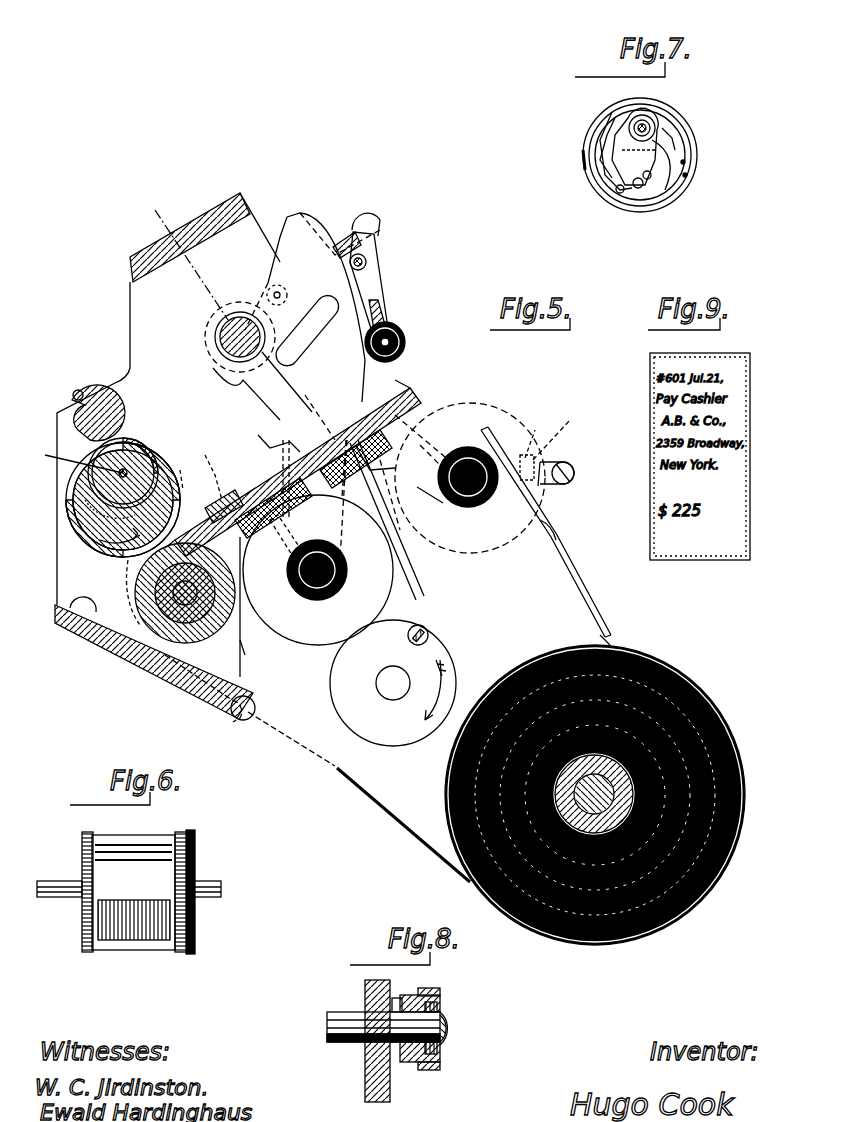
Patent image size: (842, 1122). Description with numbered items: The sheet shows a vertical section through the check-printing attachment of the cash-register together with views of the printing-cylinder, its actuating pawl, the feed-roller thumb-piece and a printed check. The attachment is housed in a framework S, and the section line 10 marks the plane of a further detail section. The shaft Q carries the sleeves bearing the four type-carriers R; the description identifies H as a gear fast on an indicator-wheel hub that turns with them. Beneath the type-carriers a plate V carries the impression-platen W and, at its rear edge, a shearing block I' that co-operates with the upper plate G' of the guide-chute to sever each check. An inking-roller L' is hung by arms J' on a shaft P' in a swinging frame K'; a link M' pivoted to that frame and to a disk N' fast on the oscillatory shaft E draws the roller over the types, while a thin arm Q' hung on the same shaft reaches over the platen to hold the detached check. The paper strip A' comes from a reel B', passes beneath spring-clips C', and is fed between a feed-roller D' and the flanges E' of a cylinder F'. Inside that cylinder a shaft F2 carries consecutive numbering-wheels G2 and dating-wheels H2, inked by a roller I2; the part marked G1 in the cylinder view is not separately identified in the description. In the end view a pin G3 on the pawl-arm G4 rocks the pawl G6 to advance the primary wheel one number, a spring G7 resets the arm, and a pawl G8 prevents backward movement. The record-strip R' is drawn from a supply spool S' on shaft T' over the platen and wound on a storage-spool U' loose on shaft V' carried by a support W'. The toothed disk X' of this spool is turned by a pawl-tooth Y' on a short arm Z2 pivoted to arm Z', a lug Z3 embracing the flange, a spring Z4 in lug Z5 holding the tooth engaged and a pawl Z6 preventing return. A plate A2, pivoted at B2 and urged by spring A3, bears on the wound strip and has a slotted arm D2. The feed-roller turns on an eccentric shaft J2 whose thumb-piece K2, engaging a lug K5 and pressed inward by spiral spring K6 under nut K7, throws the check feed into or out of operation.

In FIG. 5, the framework S is at (167, 455).
In FIG. 8, the framework S is at (366, 1041).
In FIG. 5, the section line 10 is at (185, 259).
In FIG. 5, the shaft Q is at (240, 361).
In FIG. 5, the supply spool S' is at (284, 526).
In FIG. 5, the type-carriers R is at (344, 355).
In FIG. 5, the swinging frame K' is at (343, 232).
In FIG. 5, the thin arm Q' is at (344, 323).
In FIG. 5, the shaft P' is at (382, 256).
In FIG. 5, the arms J' is at (375, 283).
In FIG. 5, the inking-roller L' is at (403, 342).
In FIG. 5, the inking-roller I2 is at (105, 420).
In FIG. 5, the dating-wheels H2 is at (150, 452).
In FIG. 6, the dating-wheels H2 is at (172, 952).
In FIG. 5, the flanges E' is at (93, 478).
In FIG. 7, the flanges E' is at (657, 155).
In FIG. 6, the flanges E' is at (133, 905).
In FIG. 5, the shaft F2 is at (72, 457).
In FIG. 7, the shaft F2 is at (658, 120).
In FIG. 5, the cylinder F' is at (82, 531).
In FIG. 7, the cylinder F' is at (587, 161).
In FIG. 6, the cylinder F' is at (129, 907).
In FIG. 5, the gear H is at (170, 510).
In FIG. 5, the feed-roller D' is at (165, 593).
In FIG. 5, the plate V is at (293, 468).
In FIG. 5, the shearing block I' is at (224, 483).
In FIG. 5, the upper plate G' is at (250, 495).
In FIG. 5, the impression-platen W is at (275, 434).
In FIG. 5, the support W' is at (375, 458).
In FIG. 5, the shaft T' is at (328, 520).
In FIG. 5, the record-strip R' is at (272, 594).
In FIG. 5, the link M' is at (399, 520).
In FIG. 5, the disk N' is at (437, 639).
In FIG. 5, the oscillatory shaft E is at (393, 683).
In FIG. 5, the shaft J2 is at (242, 648).
In FIG. 8, the shaft J2 is at (362, 1010).
In FIG. 5, the spring-clips C' is at (210, 682).
In FIG. 5, the shaft V' is at (470, 478).
In FIG. 5, the storage-spool U' is at (465, 485).
In FIG. 5, the disk X' is at (493, 402).
In FIG. 5, the pawl Z6 is at (430, 415).
In FIG. 5, the short arm Z2 is at (520, 458).
In FIG. 5, the lug Z5 is at (535, 433).
In FIG. 5, the spring Z4 is at (559, 430).
In FIG. 5, the pawl-tooth Y' is at (565, 456).
In FIG. 5, the arm Z' is at (566, 477).
In FIG. 5, the lug Z3 is at (545, 478).
In FIG. 5, the plate A2 is at (583, 580).
In FIG. 5, the arm D2 is at (558, 540).
In FIG. 5, the spring A3 is at (612, 642).
In FIG. 5, the reel B' is at (603, 795).
In FIG. 5, the pivot B2 is at (650, 655).
In FIG. 5, the paper strip A' is at (359, 797).
In FIG. 7, the consecutive numbering-wheels G2 is at (630, 112).
In FIG. 7, the pin G3 is at (636, 190).
In FIG. 7, the pawl-arm G4 is at (650, 180).
In FIG. 7, the pawl G6 is at (668, 160).
In FIG. 7, the spring G7 is at (685, 132).
In FIG. 7, the pawl G8 is at (617, 166).
In FIG. 6, the flange G1 is at (103, 950).
In FIG. 8, the thumb-piece K2 is at (440, 1000).
In FIG. 8, the lug K5 is at (398, 1000).
In FIG. 8, the spiral spring K6 is at (445, 1050).
In FIG. 8, the nut K7 is at (462, 1028).